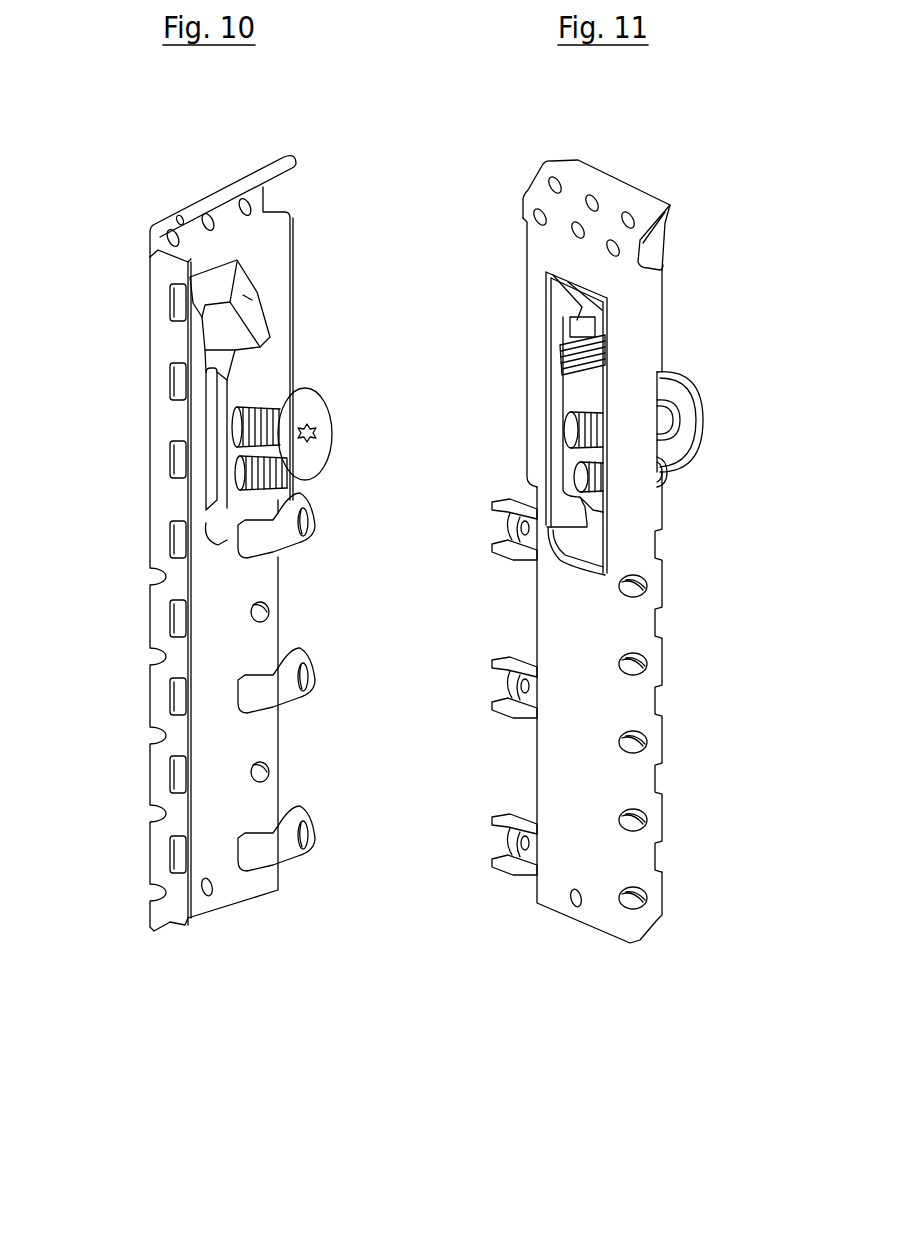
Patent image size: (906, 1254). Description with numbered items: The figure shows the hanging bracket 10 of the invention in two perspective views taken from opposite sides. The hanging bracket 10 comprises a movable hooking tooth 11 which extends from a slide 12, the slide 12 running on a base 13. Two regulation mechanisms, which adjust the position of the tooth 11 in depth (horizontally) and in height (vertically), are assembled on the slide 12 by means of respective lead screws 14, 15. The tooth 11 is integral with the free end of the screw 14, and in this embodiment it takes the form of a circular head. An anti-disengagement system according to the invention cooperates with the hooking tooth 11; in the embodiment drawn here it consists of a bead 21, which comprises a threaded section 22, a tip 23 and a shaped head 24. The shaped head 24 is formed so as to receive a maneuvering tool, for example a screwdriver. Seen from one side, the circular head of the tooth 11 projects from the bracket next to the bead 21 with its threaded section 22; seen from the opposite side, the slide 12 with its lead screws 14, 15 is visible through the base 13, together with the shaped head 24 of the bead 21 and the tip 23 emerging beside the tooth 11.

In FIG. 10, the hanging bracket 10 is at (247, 940).
In FIG. 11, the hanging bracket 10 is at (557, 942).
In FIG. 10, the movable hooking tooth 11 is at (327, 412).
In FIG. 11, the movable hooking tooth 11 is at (680, 385).
In FIG. 10, the slide 12 is at (223, 398).
In FIG. 11, the slide 12 is at (600, 512).
In FIG. 10, the base 13 is at (215, 780).
In FIG. 11, the base 13 is at (590, 750).
In FIG. 10, the lead screw 14 is at (227, 435).
In FIG. 11, the lead screw 14 is at (578, 422).
In FIG. 11, the lead screw 15 is at (573, 360).
In FIG. 10, the bead 21 is at (238, 487).
In FIG. 11, the bead 21 is at (573, 462).
In FIG. 10, the threaded section 22 is at (227, 474).
In FIG. 10, the tip 23 is at (290, 485).
In FIG. 11, the tip 23 is at (668, 482).
In FIG. 11, the shaped head 24 is at (580, 478).